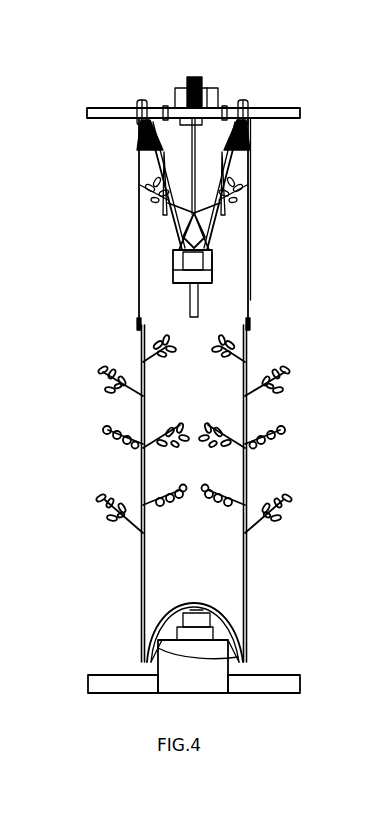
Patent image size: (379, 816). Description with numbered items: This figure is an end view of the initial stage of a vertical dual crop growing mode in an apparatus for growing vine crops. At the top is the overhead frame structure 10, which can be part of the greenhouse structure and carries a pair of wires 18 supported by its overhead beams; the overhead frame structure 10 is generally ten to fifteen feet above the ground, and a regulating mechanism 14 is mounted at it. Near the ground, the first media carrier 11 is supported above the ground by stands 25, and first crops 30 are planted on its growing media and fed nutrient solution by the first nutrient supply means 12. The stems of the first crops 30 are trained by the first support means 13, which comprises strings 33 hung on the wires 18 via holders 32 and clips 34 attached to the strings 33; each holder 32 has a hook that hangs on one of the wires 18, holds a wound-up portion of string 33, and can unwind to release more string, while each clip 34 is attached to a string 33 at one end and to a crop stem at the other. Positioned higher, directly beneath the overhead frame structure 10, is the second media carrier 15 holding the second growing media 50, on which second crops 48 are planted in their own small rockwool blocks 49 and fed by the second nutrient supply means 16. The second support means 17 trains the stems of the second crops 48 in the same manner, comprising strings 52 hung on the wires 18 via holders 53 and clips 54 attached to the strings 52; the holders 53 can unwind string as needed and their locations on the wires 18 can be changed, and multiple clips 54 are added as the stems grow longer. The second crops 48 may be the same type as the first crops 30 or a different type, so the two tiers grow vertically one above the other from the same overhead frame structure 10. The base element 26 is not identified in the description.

The overhead frame structure 10 is at (277, 96).
The first media carrier 11 is at (172, 625).
The first nutrient supply means 12 is at (215, 620).
The first support means 13 is at (262, 188).
The regulating mechanism 14 is at (209, 67).
The second media carrier 15 is at (168, 267).
The second nutrient supply means 16 is at (216, 263).
The second support means 17 is at (156, 163).
The wires 18 is at (137, 112).
The stands 25 is at (232, 668).
The base plate 26 is at (110, 683).
The first crops 30 is at (278, 390).
The holders 32 is at (252, 143).
The strings 33 is at (251, 285).
The clips 34 is at (247, 466).
The second crops 48 is at (166, 212).
The rockwool blocks 49 is at (176, 273).
The second growing media 50 is at (178, 284).
The strings 52 is at (140, 183).
The holders 53 is at (140, 104).
The clips 54 is at (172, 220).